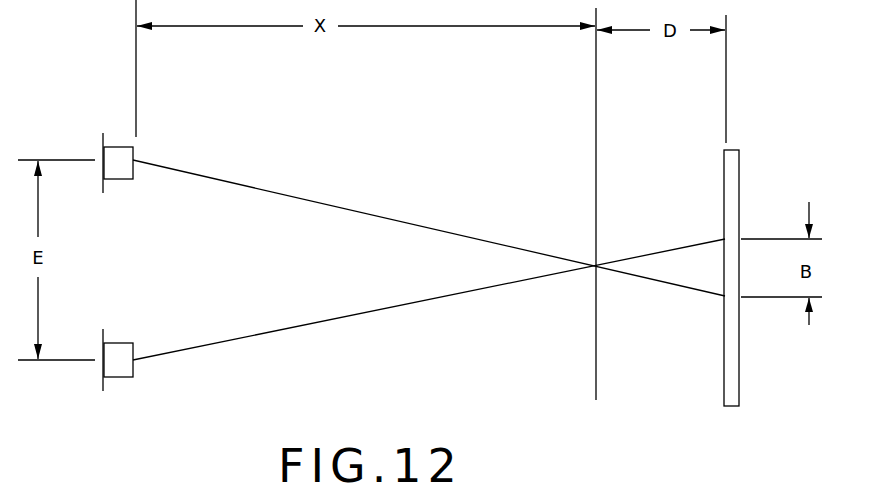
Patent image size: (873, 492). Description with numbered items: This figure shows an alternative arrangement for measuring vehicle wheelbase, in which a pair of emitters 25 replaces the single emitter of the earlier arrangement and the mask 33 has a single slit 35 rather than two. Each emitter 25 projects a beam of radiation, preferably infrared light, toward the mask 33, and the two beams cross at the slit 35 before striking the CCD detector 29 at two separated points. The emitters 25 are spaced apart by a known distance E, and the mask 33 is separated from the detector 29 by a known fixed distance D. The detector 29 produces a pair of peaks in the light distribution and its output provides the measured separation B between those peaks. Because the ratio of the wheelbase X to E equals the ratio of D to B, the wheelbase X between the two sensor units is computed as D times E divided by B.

The emitters 25 is at (118, 180).
The CCD detector 29 is at (739, 347).
The mask 33 is at (596, 373).
The slit 35 is at (578, 252).